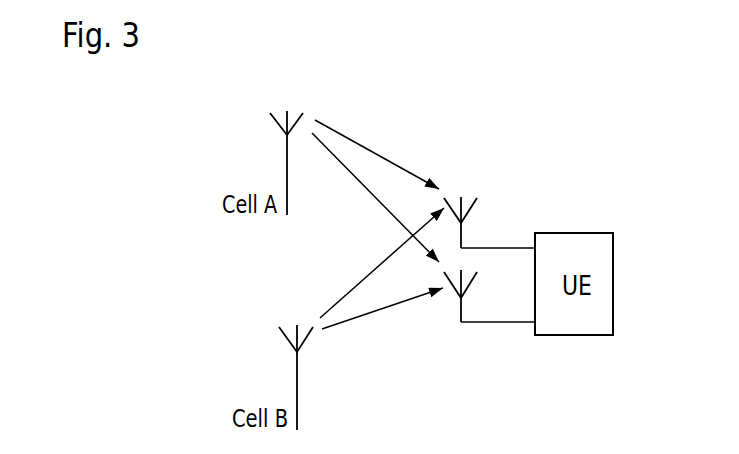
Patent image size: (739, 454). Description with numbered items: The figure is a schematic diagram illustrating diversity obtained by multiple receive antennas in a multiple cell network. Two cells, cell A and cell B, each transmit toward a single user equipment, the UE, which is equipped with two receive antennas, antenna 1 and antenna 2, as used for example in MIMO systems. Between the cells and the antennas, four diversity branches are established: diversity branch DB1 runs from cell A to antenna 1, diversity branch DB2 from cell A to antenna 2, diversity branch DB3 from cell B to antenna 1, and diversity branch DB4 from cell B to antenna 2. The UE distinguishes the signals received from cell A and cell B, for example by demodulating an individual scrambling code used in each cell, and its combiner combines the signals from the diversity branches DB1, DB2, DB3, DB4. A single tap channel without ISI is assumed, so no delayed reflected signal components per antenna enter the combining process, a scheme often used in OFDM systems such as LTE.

The antenna 1 is at (489, 222).
The antenna 2 is at (489, 296).
The diversity branch DB1 is at (376, 153).
The diversity branch DB2 is at (362, 187).
The diversity branch DB3 is at (362, 279).
The diversity branch DB4 is at (379, 311).